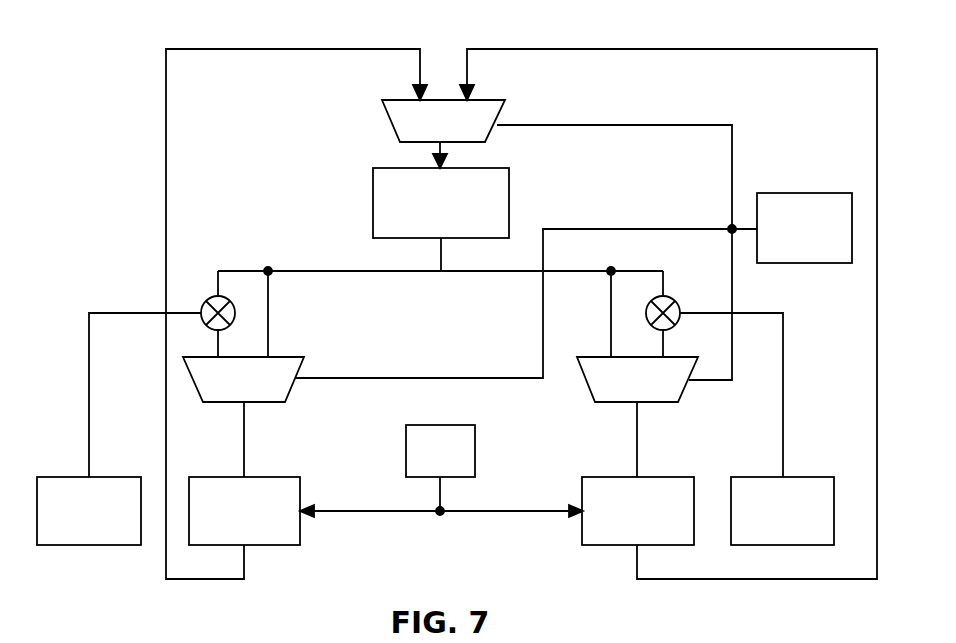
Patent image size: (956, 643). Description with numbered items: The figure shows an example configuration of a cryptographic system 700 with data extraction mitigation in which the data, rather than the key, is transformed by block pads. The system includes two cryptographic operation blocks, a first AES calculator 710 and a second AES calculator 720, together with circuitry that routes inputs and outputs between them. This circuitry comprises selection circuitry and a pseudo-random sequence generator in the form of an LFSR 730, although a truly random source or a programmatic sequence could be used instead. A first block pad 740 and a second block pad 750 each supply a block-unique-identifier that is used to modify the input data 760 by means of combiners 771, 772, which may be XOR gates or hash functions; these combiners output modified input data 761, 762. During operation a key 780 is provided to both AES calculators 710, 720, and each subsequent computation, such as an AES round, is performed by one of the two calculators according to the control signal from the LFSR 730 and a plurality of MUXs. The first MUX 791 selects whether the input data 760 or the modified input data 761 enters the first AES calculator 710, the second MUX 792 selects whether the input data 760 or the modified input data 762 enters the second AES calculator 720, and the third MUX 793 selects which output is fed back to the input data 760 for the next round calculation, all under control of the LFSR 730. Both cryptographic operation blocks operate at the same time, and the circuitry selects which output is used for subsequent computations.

The cryptographic system 700 is at (67, 53).
The first AES calculator 710 is at (300, 530).
The second AES calculator 720 is at (586, 547).
The LFSR 730 is at (573, 285).
The first block pad 740 is at (60, 476).
The second block pad 750 is at (805, 476).
The input data 760 is at (441, 219).
The modified input data 761 is at (213, 342).
The modified input data 762 is at (665, 344).
The combiner 771 is at (207, 299).
The combiner 772 is at (677, 300).
The key 780 is at (476, 452).
The first MUX 791 is at (296, 392).
The second MUX 792 is at (591, 390).
The third MUX 793 is at (479, 98).